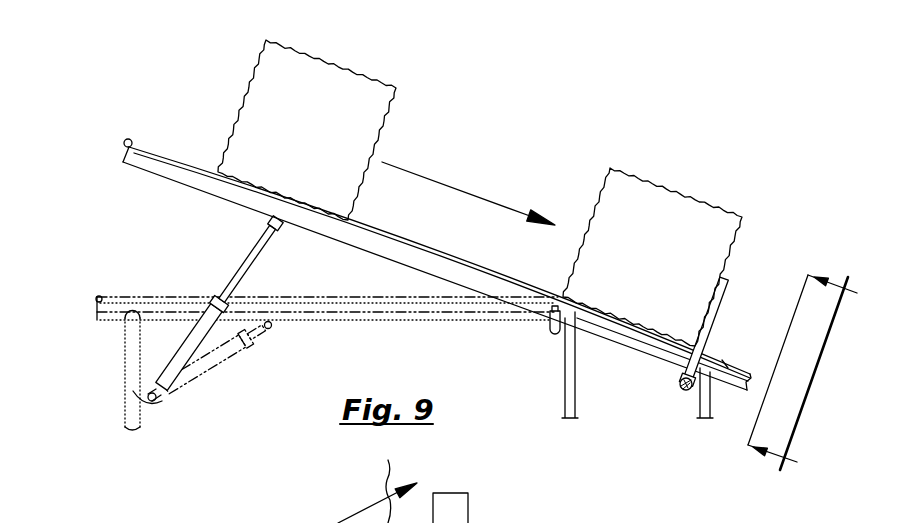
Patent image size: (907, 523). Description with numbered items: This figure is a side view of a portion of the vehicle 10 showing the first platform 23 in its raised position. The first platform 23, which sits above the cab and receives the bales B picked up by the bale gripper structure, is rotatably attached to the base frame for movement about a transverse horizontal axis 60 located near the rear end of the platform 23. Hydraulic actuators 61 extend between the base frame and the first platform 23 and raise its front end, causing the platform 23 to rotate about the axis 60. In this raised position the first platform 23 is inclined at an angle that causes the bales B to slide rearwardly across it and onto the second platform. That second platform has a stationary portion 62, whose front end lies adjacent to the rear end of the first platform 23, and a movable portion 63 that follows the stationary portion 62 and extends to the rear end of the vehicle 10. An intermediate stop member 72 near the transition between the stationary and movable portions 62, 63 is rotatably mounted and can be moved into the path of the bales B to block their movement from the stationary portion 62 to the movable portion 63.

The first platform 23 is at (192, 163).
The bales B is at (367, 121).
The transverse horizontal axis 60 is at (550, 322).
The hydraulic actuators 61 is at (180, 355).
The stationary portion 62 is at (658, 346).
The movable portion 63 is at (722, 362).
The intermediate stop member 72 is at (715, 302).
The vehicle 10 is at (886, 311).